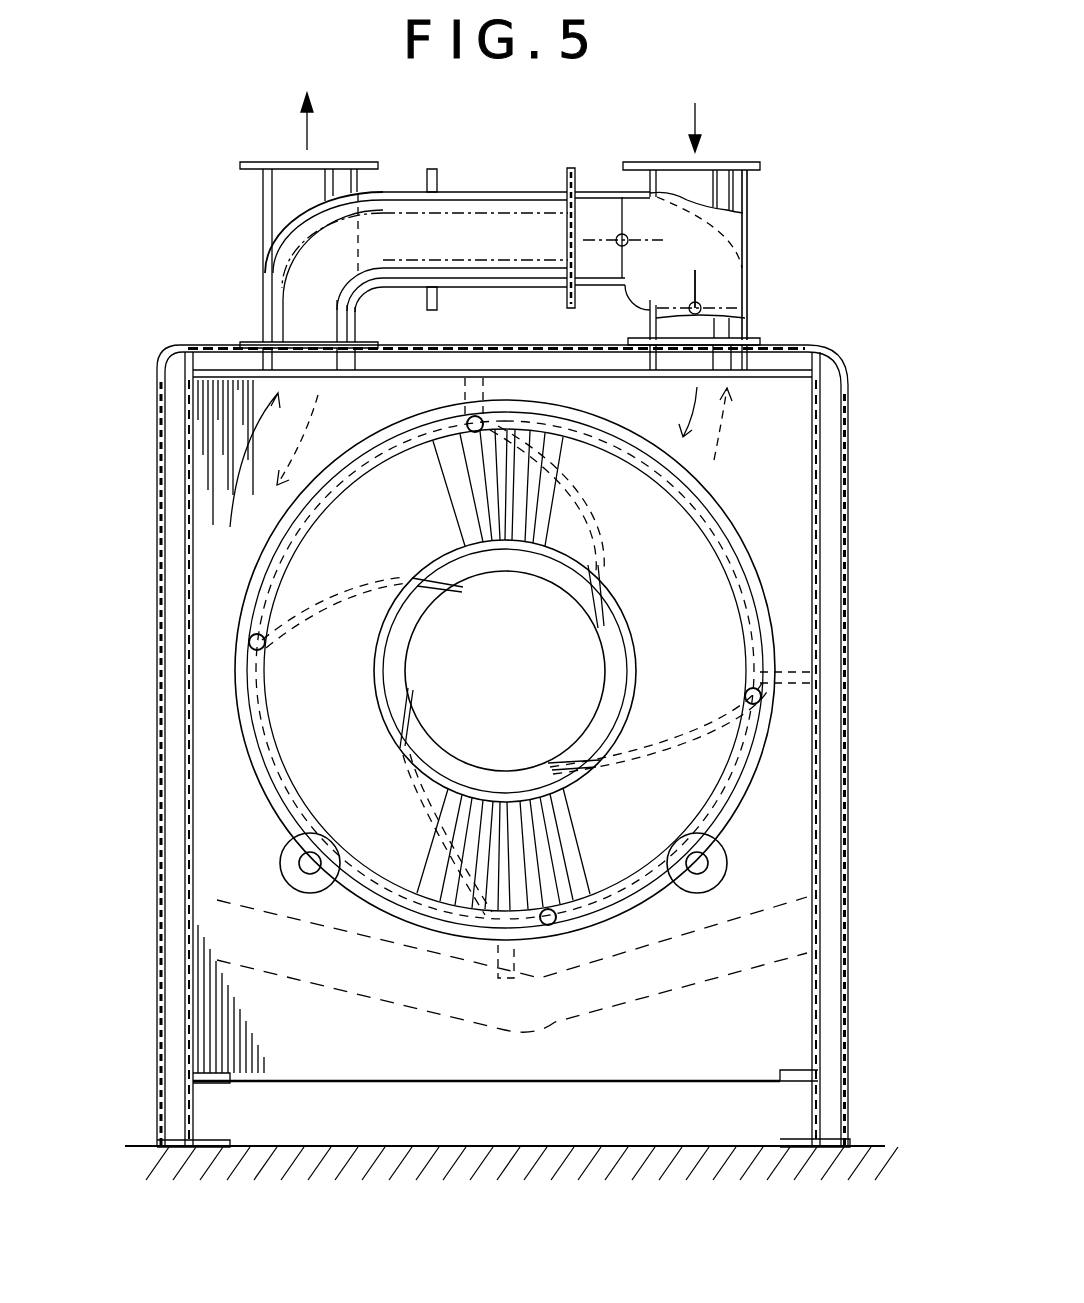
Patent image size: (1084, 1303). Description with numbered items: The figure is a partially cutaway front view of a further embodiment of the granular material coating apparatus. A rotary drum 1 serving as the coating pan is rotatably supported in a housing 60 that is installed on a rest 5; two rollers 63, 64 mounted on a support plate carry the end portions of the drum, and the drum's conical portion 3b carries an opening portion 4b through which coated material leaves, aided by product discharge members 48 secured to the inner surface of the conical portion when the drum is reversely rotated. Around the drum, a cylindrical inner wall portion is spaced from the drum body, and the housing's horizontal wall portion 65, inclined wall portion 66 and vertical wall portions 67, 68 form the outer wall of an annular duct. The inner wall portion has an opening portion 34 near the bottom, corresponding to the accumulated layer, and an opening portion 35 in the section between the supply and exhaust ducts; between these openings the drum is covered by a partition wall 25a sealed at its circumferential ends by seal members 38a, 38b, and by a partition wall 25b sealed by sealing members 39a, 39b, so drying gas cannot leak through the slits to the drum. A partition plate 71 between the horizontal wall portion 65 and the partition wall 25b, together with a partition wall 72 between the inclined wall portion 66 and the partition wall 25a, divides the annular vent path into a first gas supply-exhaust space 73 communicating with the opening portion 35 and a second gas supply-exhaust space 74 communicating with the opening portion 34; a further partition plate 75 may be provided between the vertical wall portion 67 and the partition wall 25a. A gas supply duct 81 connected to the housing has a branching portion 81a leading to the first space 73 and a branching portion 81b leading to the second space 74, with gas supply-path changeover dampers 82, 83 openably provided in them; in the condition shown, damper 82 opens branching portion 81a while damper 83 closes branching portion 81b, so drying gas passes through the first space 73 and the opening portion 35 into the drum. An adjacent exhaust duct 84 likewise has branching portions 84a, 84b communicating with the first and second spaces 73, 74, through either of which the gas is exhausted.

The rotary drum 1 is at (698, 560).
The conical portion 3b is at (290, 735).
The opening portion 4b is at (620, 670).
The rest 5 is at (820, 1103).
The partition wall 25a is at (748, 752).
The partition wall 25b is at (270, 566).
The opening portion 34 is at (268, 790).
The opening portion 35 is at (683, 503).
The seal member 38a is at (760, 696).
The seal member 38b is at (553, 922).
The sealing member 39a is at (483, 412).
The sealing member 39b is at (255, 643).
The product discharge member 48 is at (340, 593).
The housing 60 is at (850, 420).
The roller 63 is at (728, 863).
The roller 64 is at (283, 863).
The horizontal wall portion 65 is at (782, 358).
The inclined wall portion 66 is at (457, 1020).
The vertical wall portion 67 is at (817, 593).
The vertical wall portion 68 is at (188, 633).
The partition plate 71 is at (483, 412).
The partition wall 72 is at (517, 960).
The first gas supply-exhaust space 73 is at (807, 520).
The second gas supply-exhaust space 74 is at (227, 468).
The partition plate 75 is at (790, 674).
The gas supply duct 81 is at (768, 190).
The branching portion 81a is at (747, 323).
The branching portion 81b is at (387, 208).
The gas supply-path changeover damper 82 is at (700, 277).
The gas supply-path changeover damper 83 is at (622, 198).
The exhaust duct 84 is at (252, 211).
The branching portion 84a is at (760, 222).
The branching portion 84b is at (265, 277).